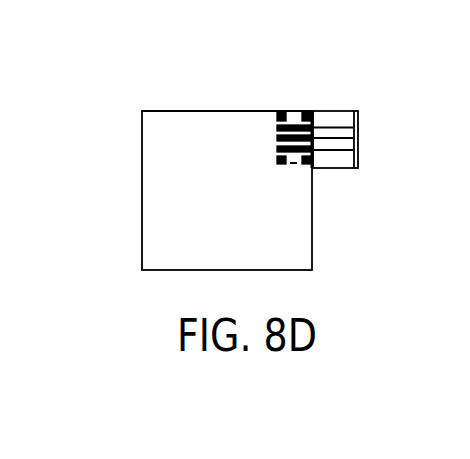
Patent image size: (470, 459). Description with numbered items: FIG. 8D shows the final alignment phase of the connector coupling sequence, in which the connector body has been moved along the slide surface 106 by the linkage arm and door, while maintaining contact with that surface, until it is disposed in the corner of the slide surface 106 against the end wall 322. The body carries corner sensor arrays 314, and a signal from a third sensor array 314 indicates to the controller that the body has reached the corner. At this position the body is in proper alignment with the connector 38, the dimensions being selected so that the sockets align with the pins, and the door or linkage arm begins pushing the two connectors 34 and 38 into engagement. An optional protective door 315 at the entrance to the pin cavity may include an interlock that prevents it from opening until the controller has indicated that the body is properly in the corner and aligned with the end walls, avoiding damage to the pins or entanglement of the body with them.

The slide surface 106 is at (165, 210).
The end wall 322 is at (154, 94).
The connector 34 is at (278, 129).
The sensor array 314 is at (277, 96).
The protective door 315 is at (314, 127).
The connector 38 is at (388, 139).